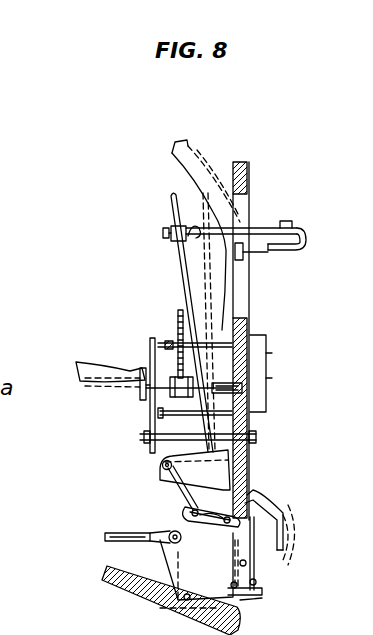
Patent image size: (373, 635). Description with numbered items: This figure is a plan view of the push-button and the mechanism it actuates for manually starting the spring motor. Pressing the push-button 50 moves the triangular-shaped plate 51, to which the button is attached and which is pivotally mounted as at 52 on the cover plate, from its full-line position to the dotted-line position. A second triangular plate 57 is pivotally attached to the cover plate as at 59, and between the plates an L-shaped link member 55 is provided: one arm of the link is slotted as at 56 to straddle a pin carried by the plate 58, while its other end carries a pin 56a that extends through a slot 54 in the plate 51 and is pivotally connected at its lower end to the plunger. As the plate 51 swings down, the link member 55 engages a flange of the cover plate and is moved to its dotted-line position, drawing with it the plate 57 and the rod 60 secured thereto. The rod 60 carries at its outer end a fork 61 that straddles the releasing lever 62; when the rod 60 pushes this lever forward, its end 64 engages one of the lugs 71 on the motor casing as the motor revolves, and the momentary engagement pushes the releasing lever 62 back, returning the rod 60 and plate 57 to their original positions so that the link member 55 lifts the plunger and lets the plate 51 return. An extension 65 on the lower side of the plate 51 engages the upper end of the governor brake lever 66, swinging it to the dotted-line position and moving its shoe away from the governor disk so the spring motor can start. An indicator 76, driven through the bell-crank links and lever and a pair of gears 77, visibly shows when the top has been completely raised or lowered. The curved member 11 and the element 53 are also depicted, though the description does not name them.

The curved arm 11 is at (84, 388).
The push-button 50 is at (105, 540).
The triangular-shaped plate 51 is at (196, 570).
The pivot 52 is at (163, 612).
The blade 53 is at (125, 593).
The slot 54 is at (260, 588).
The L-shaped link member 55 is at (265, 546).
The slot 56 is at (185, 513).
The pin 56a is at (255, 596).
The second triangular plate 57 is at (220, 516).
The plate 58 is at (195, 480).
The pivot 59 is at (162, 464).
The rod 60 is at (183, 263).
The fork 61 is at (163, 234).
The releasing lever 62 is at (258, 229).
The end of releasing lever 64 is at (262, 256).
The extension 65 is at (247, 510).
The governor brake lever 66 is at (280, 527).
The lug 71 is at (240, 260).
The indicator 76 is at (140, 395).
The pair of gears 77 is at (178, 325).